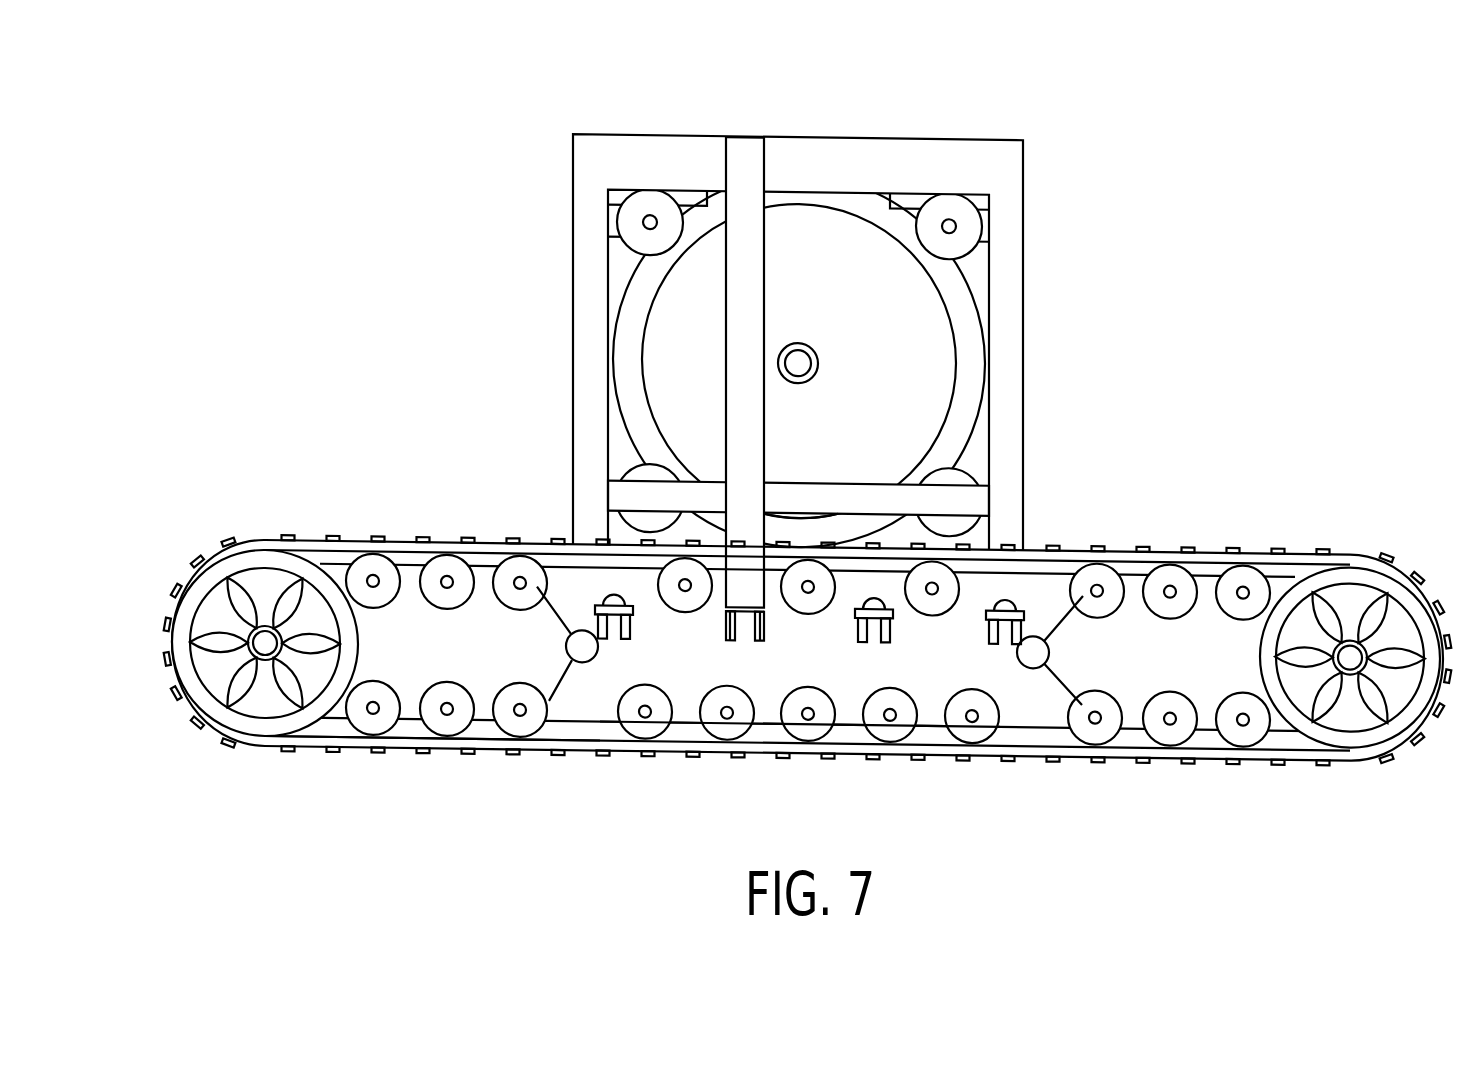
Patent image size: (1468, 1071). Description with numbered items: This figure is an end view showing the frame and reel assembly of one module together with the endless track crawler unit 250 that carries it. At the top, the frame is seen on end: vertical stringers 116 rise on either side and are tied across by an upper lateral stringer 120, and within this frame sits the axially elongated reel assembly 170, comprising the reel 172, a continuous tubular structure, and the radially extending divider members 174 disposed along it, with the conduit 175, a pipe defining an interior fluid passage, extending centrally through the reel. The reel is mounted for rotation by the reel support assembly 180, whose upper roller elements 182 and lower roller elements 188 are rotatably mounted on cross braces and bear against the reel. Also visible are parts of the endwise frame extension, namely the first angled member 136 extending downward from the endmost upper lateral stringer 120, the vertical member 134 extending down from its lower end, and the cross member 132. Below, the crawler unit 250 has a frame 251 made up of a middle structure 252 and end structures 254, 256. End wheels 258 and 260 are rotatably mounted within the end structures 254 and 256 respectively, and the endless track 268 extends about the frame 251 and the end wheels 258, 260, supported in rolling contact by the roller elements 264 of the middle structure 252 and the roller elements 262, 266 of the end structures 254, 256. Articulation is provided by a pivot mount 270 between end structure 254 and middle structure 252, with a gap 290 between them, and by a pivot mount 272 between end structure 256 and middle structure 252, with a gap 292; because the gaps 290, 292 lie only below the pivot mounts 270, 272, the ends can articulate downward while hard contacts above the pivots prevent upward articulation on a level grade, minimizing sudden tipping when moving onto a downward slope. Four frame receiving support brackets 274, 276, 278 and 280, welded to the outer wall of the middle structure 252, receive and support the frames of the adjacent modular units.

The vertical stringers 116 is at (583, 358).
The upper lateral stringers 120 is at (898, 134).
The cross member 132 is at (880, 483).
The vertical member 134 is at (777, 520).
The first angled member 136 is at (757, 238).
The reel assembly 170 is at (867, 362).
The reel 172 is at (950, 408).
The divider members 174 is at (983, 363).
The conduit 175 is at (812, 350).
The reel support assembly 180 is at (802, 183).
The upper roller elements 182 is at (627, 242).
The lower roller elements 188 is at (637, 468).
The crawler unit 250 is at (1388, 545).
The frame 251 is at (1128, 568).
The middle structure 252 is at (932, 707).
The end structure 254 is at (1284, 585).
The end structure 256 is at (332, 570).
The end wheel 258 is at (1280, 727).
The end wheel 260 is at (310, 720).
The roller elements 262 is at (1122, 737).
The roller elements 264 is at (787, 730).
The roller elements 266 is at (427, 720).
The endless track 268 is at (403, 547).
The pivot mount 270 is at (1045, 663).
The pivot mount 272 is at (597, 660).
The frame receiving support bracket 274 is at (640, 623).
The frame receiving support bracket 276 is at (763, 627).
The frame receiving support bracket 278 is at (893, 628).
The frame receiving support bracket 280 is at (1040, 622).
The gap 290 is at (1033, 720).
The gap 292 is at (575, 713).